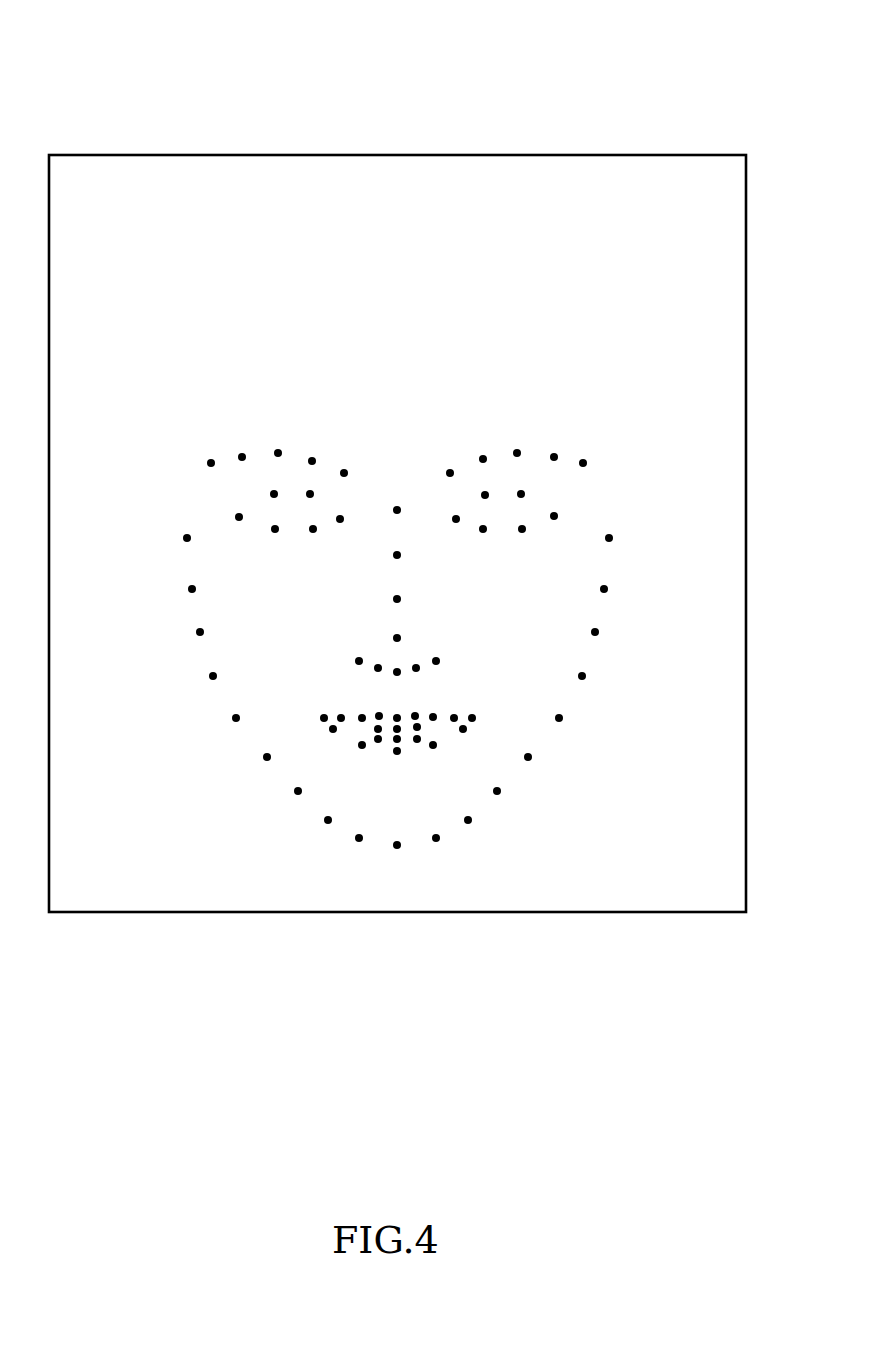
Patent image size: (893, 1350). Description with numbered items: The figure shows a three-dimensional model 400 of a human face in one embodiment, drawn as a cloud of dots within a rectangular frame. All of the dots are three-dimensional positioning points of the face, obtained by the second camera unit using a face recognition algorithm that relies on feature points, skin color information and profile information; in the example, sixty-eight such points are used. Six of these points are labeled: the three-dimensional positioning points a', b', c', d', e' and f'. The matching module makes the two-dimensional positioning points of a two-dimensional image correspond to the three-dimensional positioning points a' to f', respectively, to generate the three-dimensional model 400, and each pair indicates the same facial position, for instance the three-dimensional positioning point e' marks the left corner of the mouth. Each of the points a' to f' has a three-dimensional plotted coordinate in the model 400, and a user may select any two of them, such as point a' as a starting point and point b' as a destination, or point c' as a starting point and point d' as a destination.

The three-dimensional model 400 is at (647, 155).
The three-dimensional positioning point a' is at (335, 560).
The three-dimensional positioning point b' is at (462, 560).
The three-dimensional positioning point c' is at (237, 552).
The three-dimensional positioning point d' is at (556, 558).
The three-dimensional positioning point e' is at (299, 704).
The three-dimensional positioning point f' is at (497, 703).